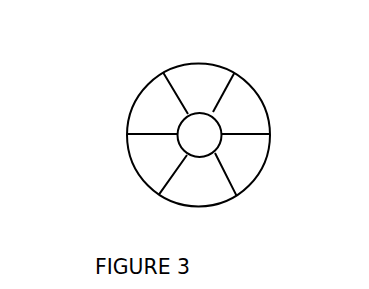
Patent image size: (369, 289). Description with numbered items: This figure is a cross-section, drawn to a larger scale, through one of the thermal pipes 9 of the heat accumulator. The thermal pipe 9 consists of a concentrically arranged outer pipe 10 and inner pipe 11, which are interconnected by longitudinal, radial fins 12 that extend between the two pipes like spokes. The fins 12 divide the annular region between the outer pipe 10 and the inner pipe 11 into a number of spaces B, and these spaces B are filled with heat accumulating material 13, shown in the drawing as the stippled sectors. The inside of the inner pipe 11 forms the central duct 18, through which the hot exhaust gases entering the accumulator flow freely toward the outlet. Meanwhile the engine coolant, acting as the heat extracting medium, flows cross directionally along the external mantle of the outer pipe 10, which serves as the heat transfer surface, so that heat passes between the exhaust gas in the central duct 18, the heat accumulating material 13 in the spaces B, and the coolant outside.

The thermal pipe 9 is at (107, 93).
The spaces B is at (157, 91).
The outer pipe 10 is at (235, 70).
The radial fins 12 is at (215, 110).
The heat accumulating material 13 is at (258, 160).
The inner pipe 11 is at (215, 152).
The central duct 18 is at (193, 152).